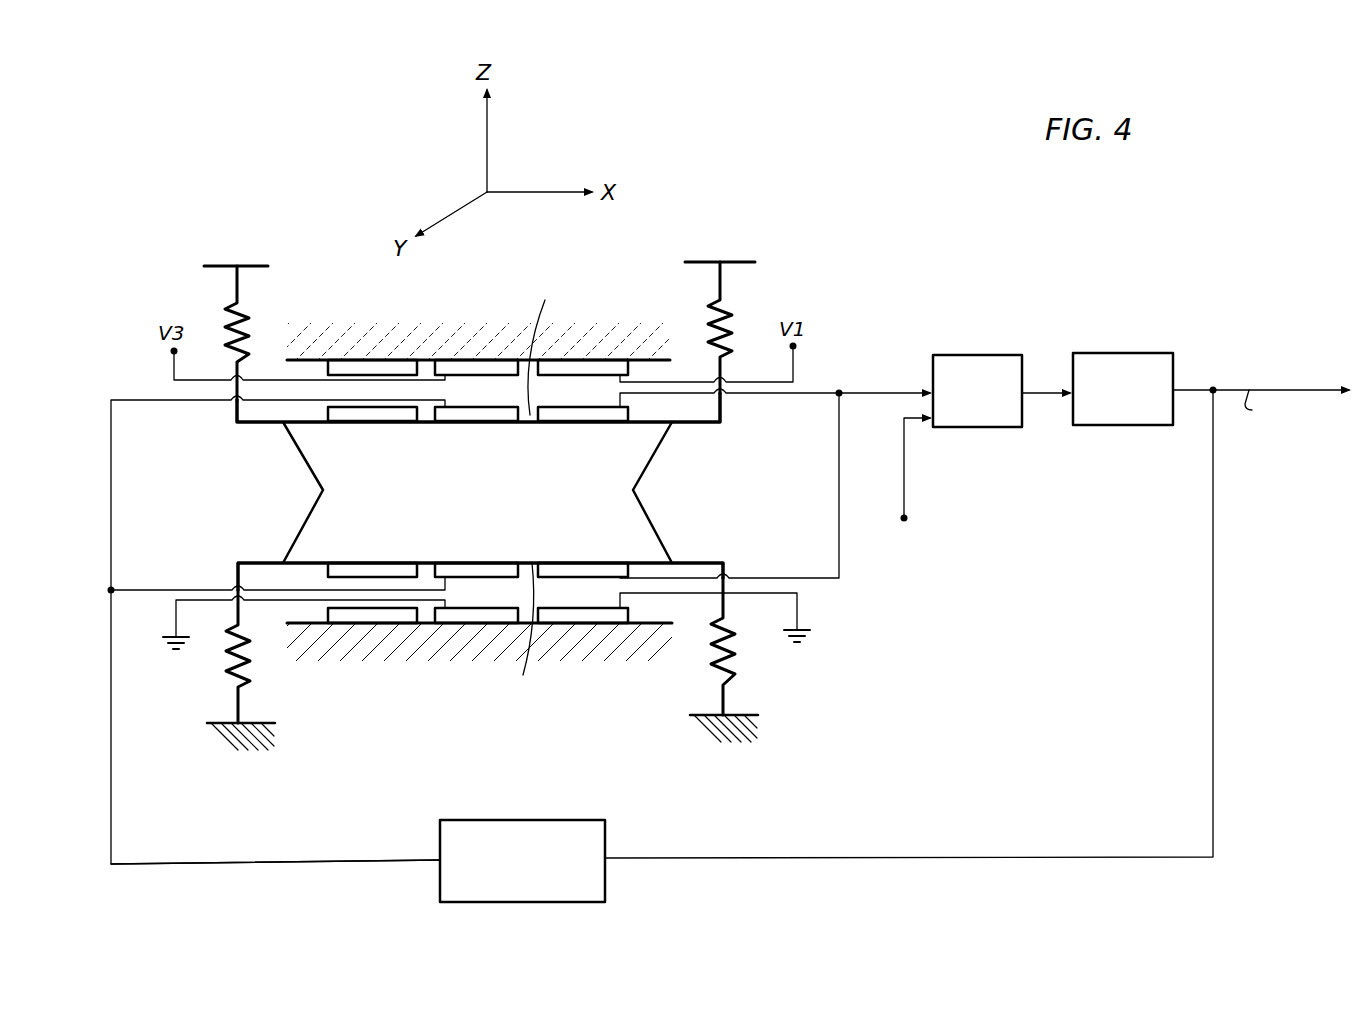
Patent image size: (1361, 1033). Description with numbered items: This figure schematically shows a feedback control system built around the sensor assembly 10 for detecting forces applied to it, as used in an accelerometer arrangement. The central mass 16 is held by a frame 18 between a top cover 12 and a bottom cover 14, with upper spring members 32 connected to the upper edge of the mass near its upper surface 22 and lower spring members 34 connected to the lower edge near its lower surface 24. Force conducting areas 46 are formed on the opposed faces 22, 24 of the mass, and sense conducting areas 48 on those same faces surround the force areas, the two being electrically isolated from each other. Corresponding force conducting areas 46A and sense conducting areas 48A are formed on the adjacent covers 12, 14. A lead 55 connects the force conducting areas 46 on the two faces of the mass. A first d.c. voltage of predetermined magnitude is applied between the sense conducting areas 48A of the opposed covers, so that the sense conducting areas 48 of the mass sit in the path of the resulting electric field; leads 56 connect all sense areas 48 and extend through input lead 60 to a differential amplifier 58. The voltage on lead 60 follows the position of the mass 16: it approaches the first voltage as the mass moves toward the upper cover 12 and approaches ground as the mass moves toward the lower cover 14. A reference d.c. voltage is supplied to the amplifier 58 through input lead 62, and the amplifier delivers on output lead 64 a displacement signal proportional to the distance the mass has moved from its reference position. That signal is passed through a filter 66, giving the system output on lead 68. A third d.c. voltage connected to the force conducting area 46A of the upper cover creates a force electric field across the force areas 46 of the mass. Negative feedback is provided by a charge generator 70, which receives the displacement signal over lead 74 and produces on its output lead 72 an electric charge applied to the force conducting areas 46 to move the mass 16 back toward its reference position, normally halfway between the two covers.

The sensor assembly 10 is at (222, 492).
The top cover 12 is at (486, 327).
The bottom cover 14 is at (415, 648).
The central mass 16 is at (480, 491).
The frame 18 is at (237, 250).
The upper surface 22 is at (541, 344).
The lower surface 24 is at (522, 636).
The upper spring members 32 is at (249, 313).
The lower spring members 34 is at (230, 672).
The force conducting areas 46 is at (498, 423).
The force conducting areas on covers 46A is at (462, 358).
The sense conducting areas 48 is at (372, 423).
The sense conducting areas on covers 48A is at (583, 358).
The lead 55 is at (110, 478).
The leads 56 is at (783, 396).
The differential amplifier 58 is at (990, 354).
The input lead 60 is at (880, 390).
The input lead 62 is at (905, 465).
The output lead 64 is at (1048, 397).
The filter 66 is at (1140, 353).
The output lead 68 is at (1197, 385).
The charge generator 70 is at (522, 820).
The output lead 72 is at (316, 860).
The lead 74 is at (1028, 855).